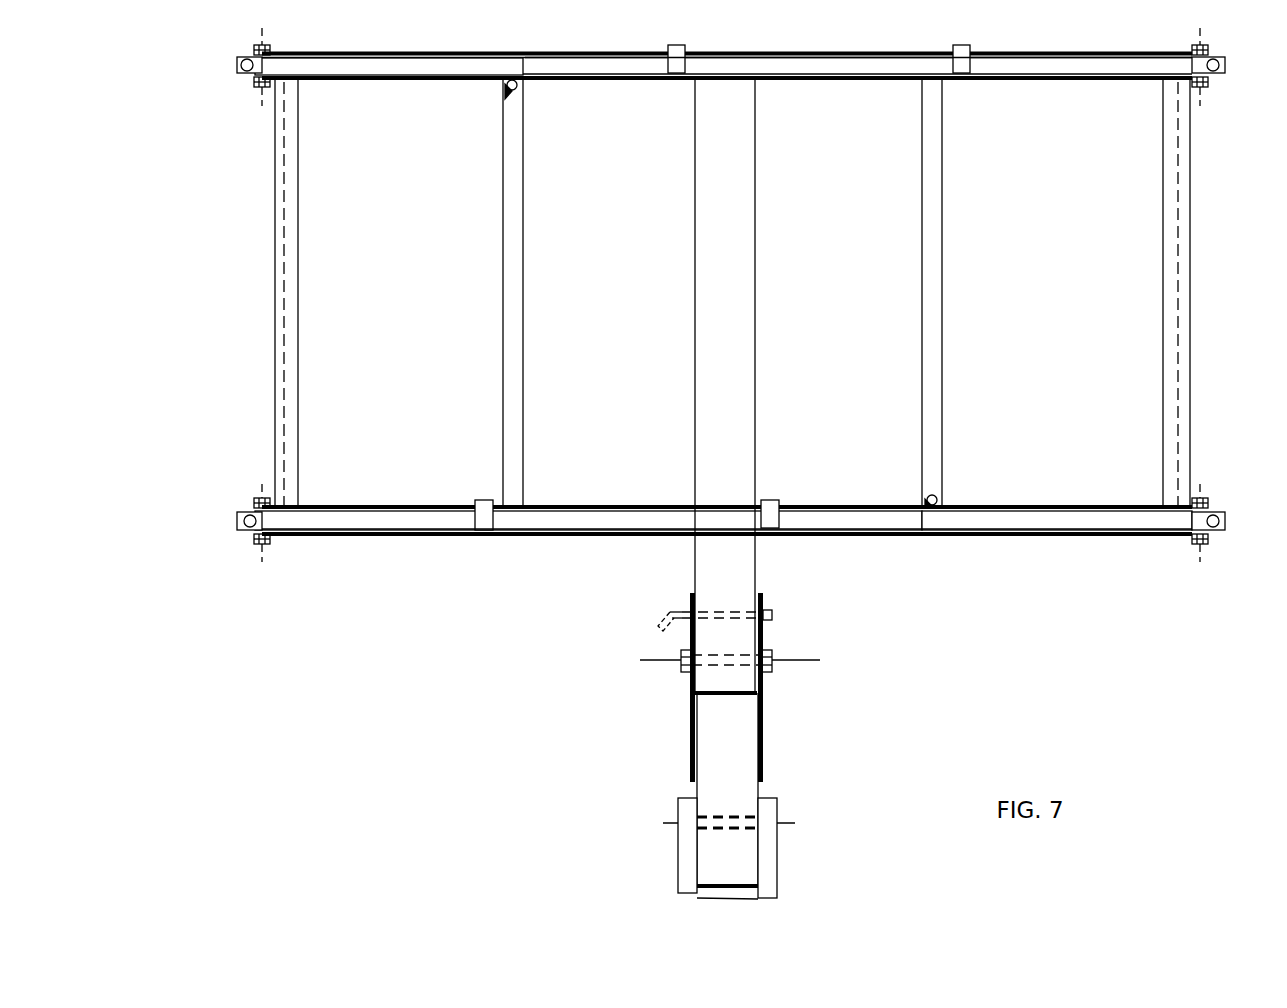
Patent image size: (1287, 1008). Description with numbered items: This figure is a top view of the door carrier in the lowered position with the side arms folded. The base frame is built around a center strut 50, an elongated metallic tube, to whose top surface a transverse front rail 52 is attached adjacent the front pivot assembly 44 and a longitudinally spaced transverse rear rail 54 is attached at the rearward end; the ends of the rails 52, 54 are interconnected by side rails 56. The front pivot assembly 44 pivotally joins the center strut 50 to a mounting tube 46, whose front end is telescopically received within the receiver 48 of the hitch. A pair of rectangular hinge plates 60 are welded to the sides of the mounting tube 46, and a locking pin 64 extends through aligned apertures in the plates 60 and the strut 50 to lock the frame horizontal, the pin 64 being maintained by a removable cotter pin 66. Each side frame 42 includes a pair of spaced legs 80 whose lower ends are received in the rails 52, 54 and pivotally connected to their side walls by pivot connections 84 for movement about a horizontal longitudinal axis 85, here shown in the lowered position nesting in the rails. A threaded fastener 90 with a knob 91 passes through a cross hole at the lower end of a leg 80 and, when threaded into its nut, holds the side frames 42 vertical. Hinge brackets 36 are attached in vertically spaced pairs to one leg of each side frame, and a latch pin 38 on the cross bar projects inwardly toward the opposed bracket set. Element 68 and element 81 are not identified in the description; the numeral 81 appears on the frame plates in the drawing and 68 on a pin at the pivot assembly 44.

The hinge bracket 36 is at (676, 70).
The latch pin 38 is at (505, 90).
The side frame 42 is at (835, 77).
The front pivot assembly 44 is at (862, 624).
The mounting tube 46 is at (763, 805).
The receiver 48 is at (678, 850).
The center strut 50 is at (765, 292).
The front rail 52 is at (878, 537).
The rear rail 54 is at (593, 82).
The side rail 56 is at (298, 296).
The hinge plate 60 is at (692, 740).
The locking pin 64 is at (664, 676).
The cotter pin 66 is at (828, 682).
The pin 68 is at (662, 598).
The leg 80 is at (388, 70).
The bottom plate 81 is at (1068, 518).
The pivot connection 84 is at (258, 90).
The horizontal longitudinal axis 85 is at (263, 502).
The threaded fastener 90 is at (245, 62).
The knob 91 is at (691, 482).